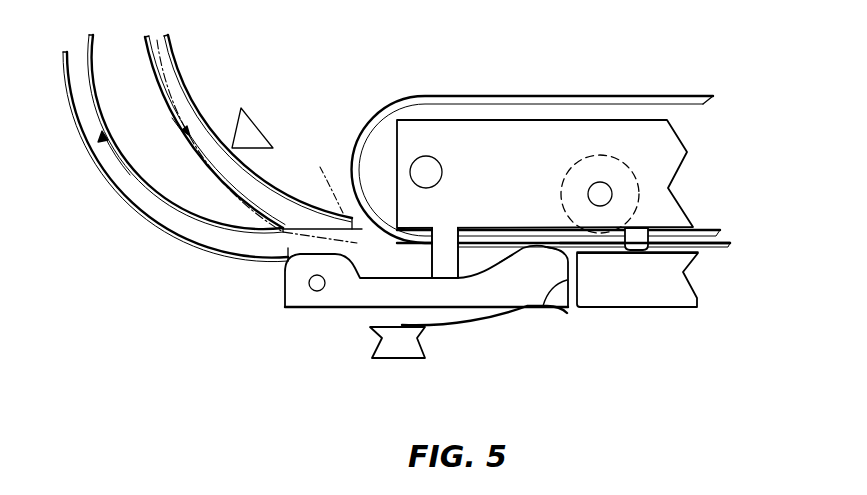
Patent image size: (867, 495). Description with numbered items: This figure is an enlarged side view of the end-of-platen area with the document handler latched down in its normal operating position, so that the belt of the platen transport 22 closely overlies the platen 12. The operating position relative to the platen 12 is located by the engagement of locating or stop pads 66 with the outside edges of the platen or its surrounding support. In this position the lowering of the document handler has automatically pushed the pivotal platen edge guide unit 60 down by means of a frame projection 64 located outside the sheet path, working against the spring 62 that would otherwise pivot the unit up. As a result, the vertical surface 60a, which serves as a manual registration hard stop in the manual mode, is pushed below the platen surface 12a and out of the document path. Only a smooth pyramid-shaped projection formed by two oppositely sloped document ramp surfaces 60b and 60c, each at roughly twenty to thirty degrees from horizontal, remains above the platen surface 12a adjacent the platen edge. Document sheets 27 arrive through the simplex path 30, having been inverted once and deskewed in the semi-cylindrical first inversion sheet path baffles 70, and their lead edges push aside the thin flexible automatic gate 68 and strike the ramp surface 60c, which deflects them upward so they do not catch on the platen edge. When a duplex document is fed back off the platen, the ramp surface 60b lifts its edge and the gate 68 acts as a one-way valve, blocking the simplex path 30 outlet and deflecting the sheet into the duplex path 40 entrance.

The belt transport system 22 is at (578, 76).
The first inversion sheet path baffles 70 is at (197, 117).
The simplex path 30 is at (198, 157).
The duplex path 40 is at (133, 180).
The automatic gate 68 is at (313, 227).
The frame projection 64 is at (437, 257).
The stop pads 66 is at (638, 233).
The document sheets 27 is at (707, 245).
The pivotal platen edge guide unit 60 is at (350, 300).
The vertical surface 60a is at (563, 283).
The document ramp surface 60b is at (553, 250).
The document ramp surface 60c is at (505, 256).
The spring 62 is at (488, 314).
The platen 12 is at (660, 293).
The platen surface 12a is at (593, 253).